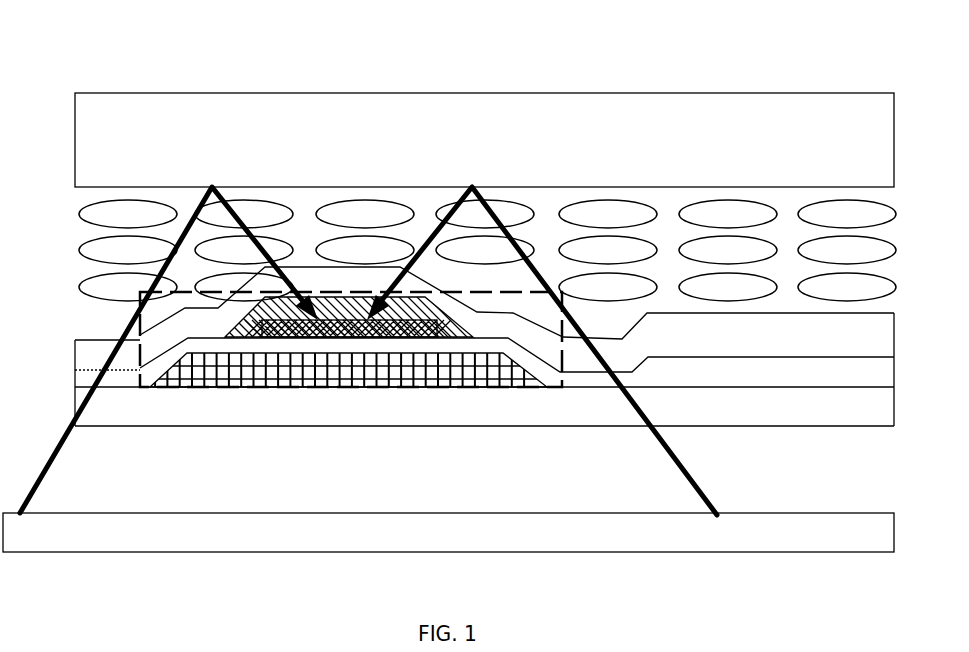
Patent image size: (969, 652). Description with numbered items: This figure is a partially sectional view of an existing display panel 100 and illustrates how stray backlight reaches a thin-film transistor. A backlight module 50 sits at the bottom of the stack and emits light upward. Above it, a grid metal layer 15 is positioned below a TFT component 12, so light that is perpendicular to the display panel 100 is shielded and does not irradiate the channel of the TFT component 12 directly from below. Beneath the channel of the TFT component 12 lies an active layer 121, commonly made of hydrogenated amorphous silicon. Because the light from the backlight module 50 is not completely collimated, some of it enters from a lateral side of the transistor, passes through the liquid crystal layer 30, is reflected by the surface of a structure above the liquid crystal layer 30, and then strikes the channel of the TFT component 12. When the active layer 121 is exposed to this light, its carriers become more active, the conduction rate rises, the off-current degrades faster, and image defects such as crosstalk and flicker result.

The display panel 100 is at (849, 46).
The liquid crystal layer 30 is at (68, 195).
The TFT component 12 is at (225, 386).
The grid metal layer 15 is at (290, 370).
The active layer 121 is at (335, 337).
The backlight module 50 is at (450, 538).